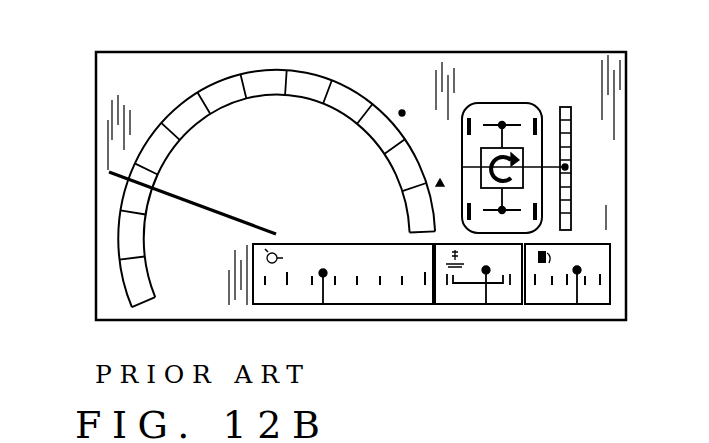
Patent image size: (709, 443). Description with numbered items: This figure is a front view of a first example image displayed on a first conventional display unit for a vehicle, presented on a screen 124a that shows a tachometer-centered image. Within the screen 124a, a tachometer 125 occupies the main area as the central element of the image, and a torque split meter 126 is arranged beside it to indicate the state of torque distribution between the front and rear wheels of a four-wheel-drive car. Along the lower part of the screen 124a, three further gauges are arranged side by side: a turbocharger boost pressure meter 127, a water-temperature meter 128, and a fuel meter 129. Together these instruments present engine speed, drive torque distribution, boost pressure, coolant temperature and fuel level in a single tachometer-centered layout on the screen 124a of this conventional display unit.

The screen 124a is at (392, 28).
The tachometer 125 is at (385, 91).
The torque split meter 126 is at (567, 92).
The turbocharger boost pressure meter 127 is at (347, 320).
The water-temperature meter 128 is at (470, 320).
The fuel meter 129 is at (563, 320).